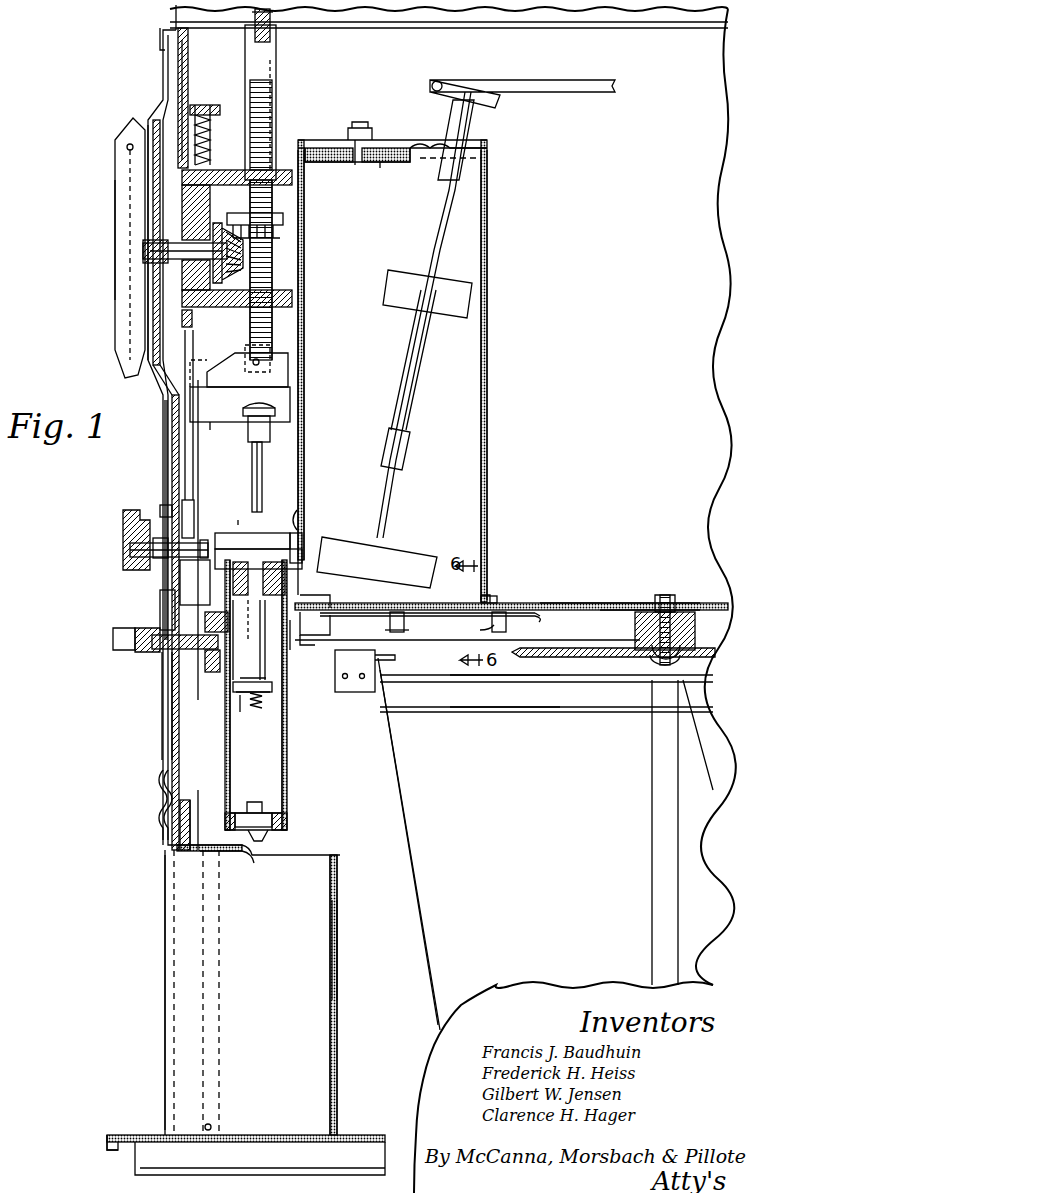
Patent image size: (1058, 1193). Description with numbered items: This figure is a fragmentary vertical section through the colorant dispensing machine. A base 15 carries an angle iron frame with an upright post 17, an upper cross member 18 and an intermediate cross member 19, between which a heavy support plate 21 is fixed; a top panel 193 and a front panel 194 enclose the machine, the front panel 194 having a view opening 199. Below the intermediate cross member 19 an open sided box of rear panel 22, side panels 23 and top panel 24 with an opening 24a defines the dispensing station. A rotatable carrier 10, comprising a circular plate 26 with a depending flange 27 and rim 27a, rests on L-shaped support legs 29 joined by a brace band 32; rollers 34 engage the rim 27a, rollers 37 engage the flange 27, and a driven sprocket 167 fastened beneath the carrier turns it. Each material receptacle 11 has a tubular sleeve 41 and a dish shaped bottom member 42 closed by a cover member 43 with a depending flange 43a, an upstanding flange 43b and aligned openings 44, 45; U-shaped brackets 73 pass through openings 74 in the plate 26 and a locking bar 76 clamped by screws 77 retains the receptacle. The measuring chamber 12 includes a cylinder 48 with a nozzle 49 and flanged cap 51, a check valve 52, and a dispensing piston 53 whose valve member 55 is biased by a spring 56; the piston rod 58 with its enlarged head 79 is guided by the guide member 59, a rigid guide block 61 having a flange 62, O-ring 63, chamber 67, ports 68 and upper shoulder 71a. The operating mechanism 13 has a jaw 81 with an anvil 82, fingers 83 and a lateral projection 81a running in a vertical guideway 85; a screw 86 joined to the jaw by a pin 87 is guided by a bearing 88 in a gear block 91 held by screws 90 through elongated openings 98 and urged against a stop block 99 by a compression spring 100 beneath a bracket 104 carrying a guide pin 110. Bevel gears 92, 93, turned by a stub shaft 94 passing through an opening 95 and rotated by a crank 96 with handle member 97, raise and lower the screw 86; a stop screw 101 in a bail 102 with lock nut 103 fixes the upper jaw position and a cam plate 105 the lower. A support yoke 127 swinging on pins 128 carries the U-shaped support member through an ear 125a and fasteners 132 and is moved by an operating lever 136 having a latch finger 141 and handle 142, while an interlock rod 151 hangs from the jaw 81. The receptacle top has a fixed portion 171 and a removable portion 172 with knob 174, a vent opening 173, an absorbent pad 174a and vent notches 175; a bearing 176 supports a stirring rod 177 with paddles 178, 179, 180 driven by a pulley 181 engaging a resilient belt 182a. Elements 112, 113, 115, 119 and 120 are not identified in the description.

The top panel 193 is at (174, 15).
The upper cross member 18 is at (160, 43).
The front panel 194 is at (163, 100).
The support plate 21 is at (182, 90).
The crank 96 is at (140, 128).
The handle member 97 is at (118, 187).
The vertically elongated opening 95 is at (143, 250).
The stub shaft 94 is at (145, 262).
The bracket 104 is at (210, 108).
The guide pin 110 is at (205, 120).
The compression spring 100 is at (205, 143).
The lock nut 103 is at (268, 30).
The stop screw 101 is at (276, 58).
The bail 102 is at (272, 85).
The removable portion 172 is at (322, 142).
The knob 174 is at (360, 125).
The vent opening 173 is at (388, 142).
The upright post 17 is at (330, 162).
The absorbent pad 174a is at (355, 165).
The vent notches 175 is at (384, 162).
The vertically elongated openings 98 is at (170, 196).
The gear block 91 is at (200, 180).
The screws 90 is at (200, 210).
The bevel gear 92 is at (300, 200).
The bevel gear 93 is at (245, 252).
The bearing 88 is at (268, 290).
The screw 86 is at (262, 325).
The pin 87 is at (260, 362).
The jaw 81 is at (290, 360).
The operating mechanism 13 is at (305, 385).
The anvil 82 is at (255, 395).
The enlarged head 79 is at (276, 410).
The lateral projection 81a is at (222, 410).
The fingers 83 is at (280, 418).
The piston rod 58 is at (252, 454).
The stop block 99 is at (193, 322).
The vertical guideway 85 is at (193, 350).
The cam plate 105 is at (185, 453).
The pin 112 is at (165, 505).
The shaft 113 is at (162, 530).
The arm 115 is at (190, 510).
The piston rod guide member 59 is at (243, 519).
The depending flange 43a is at (225, 545).
The upstanding flange 43b is at (298, 515).
The cover member 43 is at (300, 540).
The bracket 120 is at (123, 562).
The opening 45 is at (228, 553).
The opening 44 is at (240, 590).
The arm 119 is at (185, 598).
The handle 142 is at (116, 628).
The operating lever 136 is at (135, 650).
The ear 125a is at (165, 648).
The latch finger 141 is at (175, 668).
The interlock rod 151 is at (185, 690).
The fasteners 132 is at (210, 675).
The guide block 61 is at (286, 580).
The chamber 67 is at (258, 600).
The O-ring 63 is at (252, 620).
The ports 68 is at (268, 620).
The flange 62 is at (300, 615).
The depending flange 27 is at (308, 630).
The outwardly extending rim 27a is at (302, 645).
The upper shoulder 71a is at (292, 650).
The rollers 34 is at (337, 665).
The rollers 37 is at (405, 628).
The screws 77 is at (480, 630).
The U-shaped brackets 73 is at (508, 628).
The openings 74 is at (490, 598).
The locking bar 76 is at (525, 618).
The rotatable carrier 10 is at (551, 600).
The circular plate 26 is at (590, 606).
The driven sprocket 167 is at (567, 657).
The brace band 32 is at (502, 682).
The dish shaped bottom member 42 is at (487, 600).
The tubular sleeve 41 is at (488, 350).
The material receptacle 11 is at (494, 415).
The bearing 176 is at (456, 112).
The stirring rod 177 is at (435, 236).
The paddle 178 is at (412, 268).
The paddle 179 is at (410, 440).
The paddle 180 is at (395, 548).
The fixed portion 171 is at (480, 140).
The pulley 181 is at (490, 82).
The resilient belt 182a is at (437, 80).
The view opening 199 is at (170, 754).
The support yoke 127 is at (208, 795).
The measuring chamber 12 is at (294, 759).
The cylinder 48 is at (287, 785).
The flanged cap 51 is at (288, 825).
The nozzle 49 is at (270, 838).
The check valve 52 is at (253, 801).
The valve member 55 is at (243, 700).
The spring 56 is at (262, 708).
The dispensing piston 53 is at (275, 695).
The intermediate cross member 19 is at (190, 852).
The top panel 24 is at (236, 852).
The opening 24a is at (258, 855).
The support legs 29 is at (404, 820).
The side panels 23 is at (336, 958).
The rear panel 22 is at (338, 975).
The pins 128 is at (215, 1125).
The base 15 is at (135, 1160).